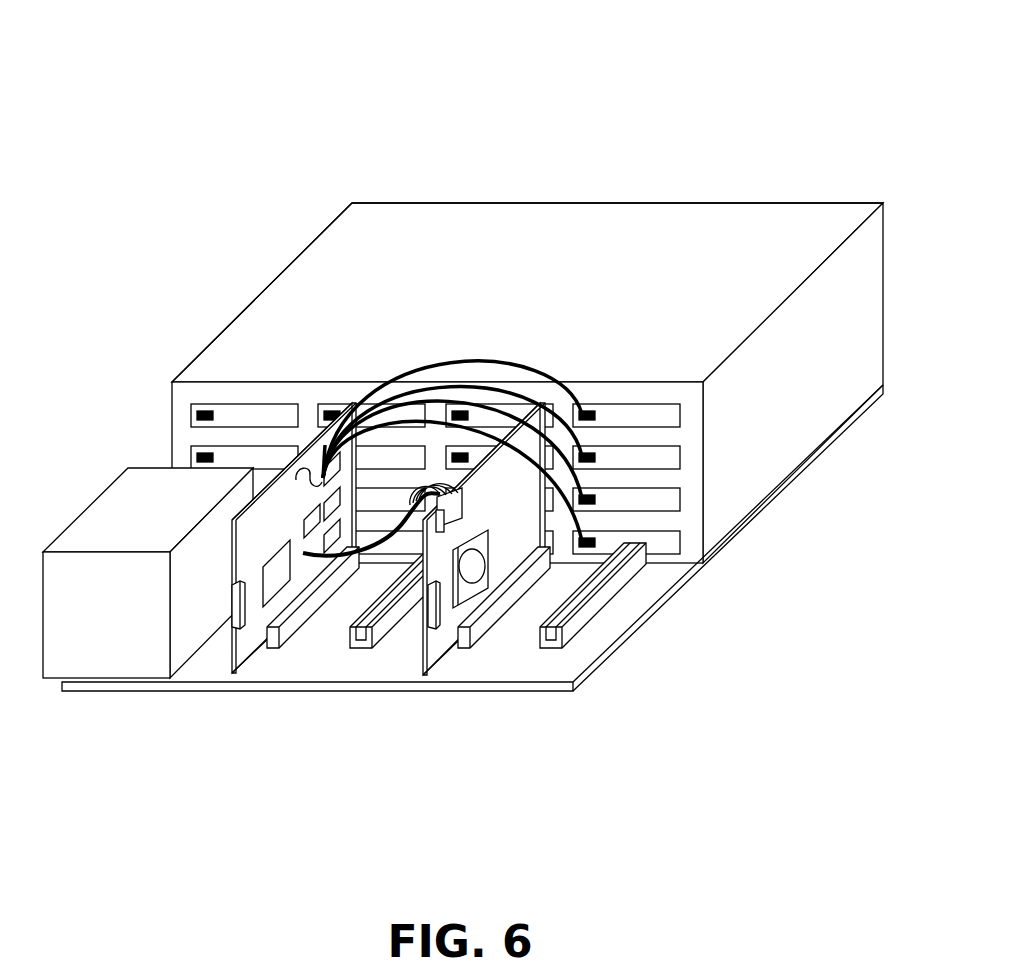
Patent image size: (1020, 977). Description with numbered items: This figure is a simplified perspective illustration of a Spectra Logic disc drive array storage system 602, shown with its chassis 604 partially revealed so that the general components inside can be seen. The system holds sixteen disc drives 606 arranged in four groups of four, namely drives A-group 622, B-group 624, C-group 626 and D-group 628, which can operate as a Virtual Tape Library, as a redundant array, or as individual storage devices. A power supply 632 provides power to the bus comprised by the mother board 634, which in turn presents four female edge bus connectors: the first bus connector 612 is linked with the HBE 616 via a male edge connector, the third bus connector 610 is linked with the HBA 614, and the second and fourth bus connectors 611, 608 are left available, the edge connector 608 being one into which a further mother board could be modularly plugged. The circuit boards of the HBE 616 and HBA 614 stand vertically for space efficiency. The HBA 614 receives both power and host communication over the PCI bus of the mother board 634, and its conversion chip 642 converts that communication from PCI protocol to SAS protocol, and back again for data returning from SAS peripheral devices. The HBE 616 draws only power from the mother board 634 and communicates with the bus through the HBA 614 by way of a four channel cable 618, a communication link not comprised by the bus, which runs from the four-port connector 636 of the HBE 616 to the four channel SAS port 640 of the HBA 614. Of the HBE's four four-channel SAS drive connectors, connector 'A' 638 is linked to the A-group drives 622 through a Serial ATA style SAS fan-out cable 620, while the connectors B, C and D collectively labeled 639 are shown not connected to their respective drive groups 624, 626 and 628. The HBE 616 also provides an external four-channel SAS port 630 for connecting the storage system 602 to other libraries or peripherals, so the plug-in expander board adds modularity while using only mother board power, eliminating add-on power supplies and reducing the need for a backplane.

The D-500 disc drive array storage system 602 is at (487, 55).
The chassis 604 is at (778, 475).
The disc drives 606 is at (682, 500).
The fourth bus connector 608 is at (620, 593).
The third bus connector 610 is at (488, 630).
The second bus connector 611 is at (358, 650).
The first bus connector 612 is at (283, 642).
The HBA 614 is at (417, 648).
The HBE 616 is at (247, 663).
The 4 channel cable 618 is at (367, 550).
The cable bundle 620 is at (452, 363).
The disc drives A1-A4 622 is at (620, 378).
The disc drives B1-B4 624 is at (508, 351).
The disc drives C1-C4 626 is at (360, 368).
The disc drives D1-D4 628 is at (248, 369).
The external 4-channel SAS port 630 is at (237, 580).
The power supply 632 is at (155, 468).
The mother board 634 is at (603, 662).
The 4-port connector 636 is at (307, 548).
The connector 'A' 638 is at (298, 486).
The 4-channel SAS port connectors B, C and D 639 is at (291, 516).
The four channel SAS port 640 is at (463, 512).
The conversion chip 642 is at (492, 567).